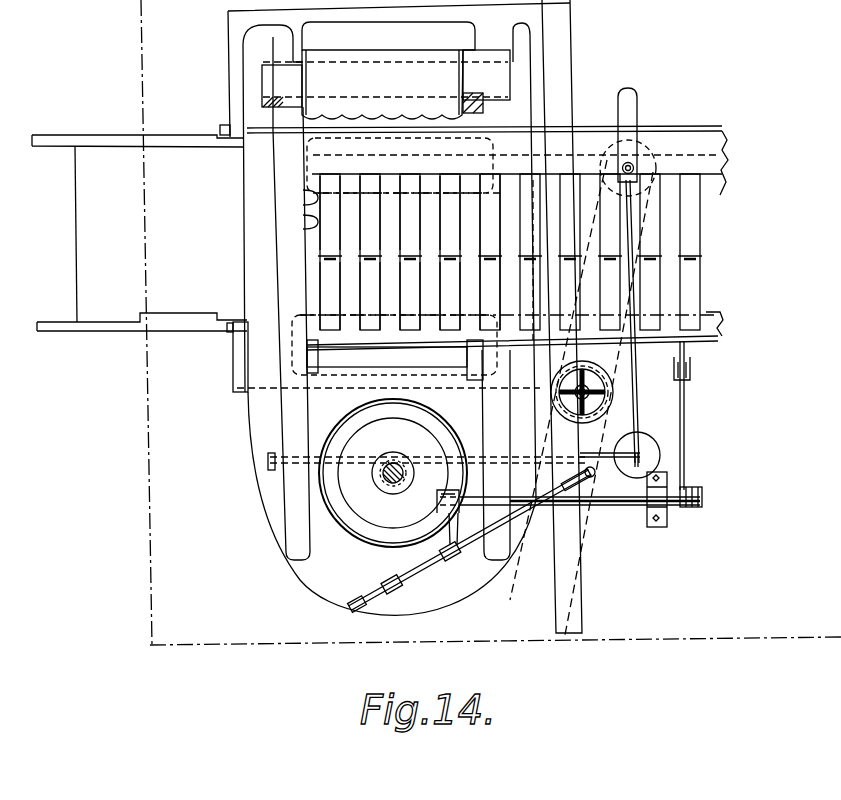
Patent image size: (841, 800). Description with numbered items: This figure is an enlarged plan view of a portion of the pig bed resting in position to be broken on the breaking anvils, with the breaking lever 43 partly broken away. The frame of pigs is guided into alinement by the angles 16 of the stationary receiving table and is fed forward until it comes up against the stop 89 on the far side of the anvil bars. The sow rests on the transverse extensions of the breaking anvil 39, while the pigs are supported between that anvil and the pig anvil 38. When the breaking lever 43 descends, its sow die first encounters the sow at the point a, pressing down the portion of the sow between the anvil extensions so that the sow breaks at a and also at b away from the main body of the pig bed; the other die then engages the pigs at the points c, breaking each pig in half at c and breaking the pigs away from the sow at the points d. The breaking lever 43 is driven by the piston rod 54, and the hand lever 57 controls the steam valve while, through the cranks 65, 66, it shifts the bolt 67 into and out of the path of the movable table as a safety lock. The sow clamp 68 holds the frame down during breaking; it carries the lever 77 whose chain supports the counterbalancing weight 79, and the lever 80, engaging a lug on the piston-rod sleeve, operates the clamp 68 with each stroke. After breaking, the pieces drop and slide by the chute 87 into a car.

The breaking lever 43 is at (386, 70).
The sow clamp 68 is at (630, 108).
The angles 16 is at (690, 128).
The chute 87 is at (87, 237).
The breaking anvil 39 is at (305, 197).
The stop 89 is at (308, 222).
The anvil 38 is at (313, 318).
The piston rod 54 is at (389, 485).
The lever 80 is at (607, 449).
The weight 79 is at (648, 440).
The lever 77 is at (634, 387).
The bolt 67 is at (686, 349).
The crank 66 is at (687, 508).
The hand lever 57 is at (450, 561).
The crank 65 is at (450, 537).
The point a is at (409, 169).
The point b is at (485, 245).
The points c is at (390, 283).
The points d is at (390, 207).